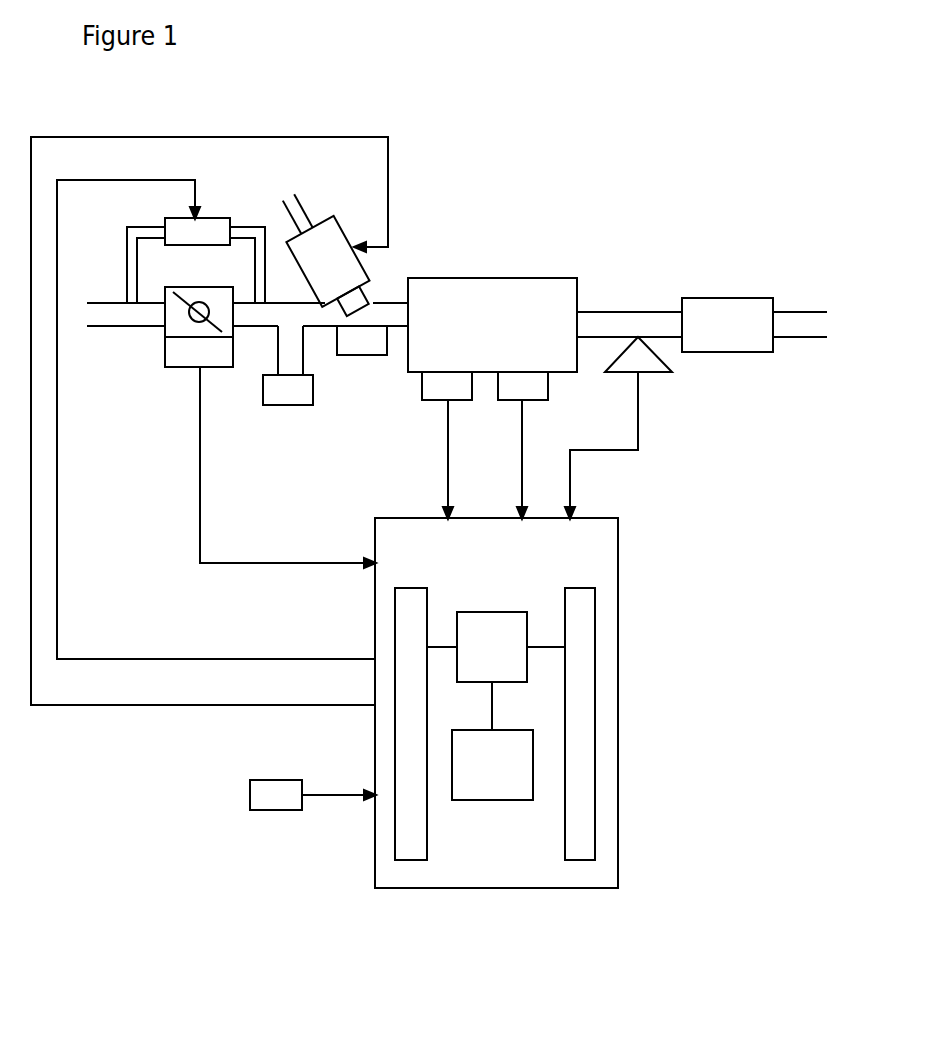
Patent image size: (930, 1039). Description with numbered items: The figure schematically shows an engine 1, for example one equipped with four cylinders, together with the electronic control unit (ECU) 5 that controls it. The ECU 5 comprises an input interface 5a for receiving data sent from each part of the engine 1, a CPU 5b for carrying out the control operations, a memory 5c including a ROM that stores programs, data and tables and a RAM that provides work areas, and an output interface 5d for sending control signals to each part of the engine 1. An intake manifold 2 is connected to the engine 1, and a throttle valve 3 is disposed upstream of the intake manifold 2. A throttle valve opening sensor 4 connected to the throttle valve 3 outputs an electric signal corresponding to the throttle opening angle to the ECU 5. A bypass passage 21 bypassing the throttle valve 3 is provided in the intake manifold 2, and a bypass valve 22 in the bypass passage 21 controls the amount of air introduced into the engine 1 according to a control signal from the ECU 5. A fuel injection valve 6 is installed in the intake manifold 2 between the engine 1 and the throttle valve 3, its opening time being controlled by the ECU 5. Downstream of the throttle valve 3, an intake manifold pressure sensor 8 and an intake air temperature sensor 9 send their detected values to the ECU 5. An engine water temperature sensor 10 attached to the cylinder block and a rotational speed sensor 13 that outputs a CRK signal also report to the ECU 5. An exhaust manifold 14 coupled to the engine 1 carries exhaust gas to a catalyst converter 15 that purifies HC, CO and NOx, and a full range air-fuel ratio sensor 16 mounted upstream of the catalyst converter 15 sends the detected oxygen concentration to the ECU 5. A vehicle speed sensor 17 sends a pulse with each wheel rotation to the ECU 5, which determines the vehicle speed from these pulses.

The engine 1 is at (490, 277).
The intake manifold 2 is at (393, 298).
The throttle valve 3 is at (165, 312).
The throttle valve opening (θTH) sensor 4 is at (178, 367).
The electronic control unit (ECU) 5 is at (618, 548).
The input interface 5a is at (427, 605).
The CPU 5b is at (495, 610).
The memory 5c is at (493, 800).
The output interface 5d is at (595, 637).
The fuel injection valve 6 is at (338, 247).
The intake manifold pressure (Pb) sensor 8 is at (270, 405).
The intake air temperature (Ta) sensor 9 is at (363, 357).
The engine water temperature (Tw) sensor 10 is at (422, 388).
The rotational speed (Ne) sensor 13 is at (510, 400).
The exhaust manifold 14 is at (603, 312).
The catalyst converter 15 is at (727, 298).
The full range air-fuel ratio (LAF) sensor 16 is at (627, 372).
The vehicle speed (VP) sensor 17 is at (277, 780).
The bypass passage 21 is at (260, 275).
The bypass valve 22 is at (212, 217).